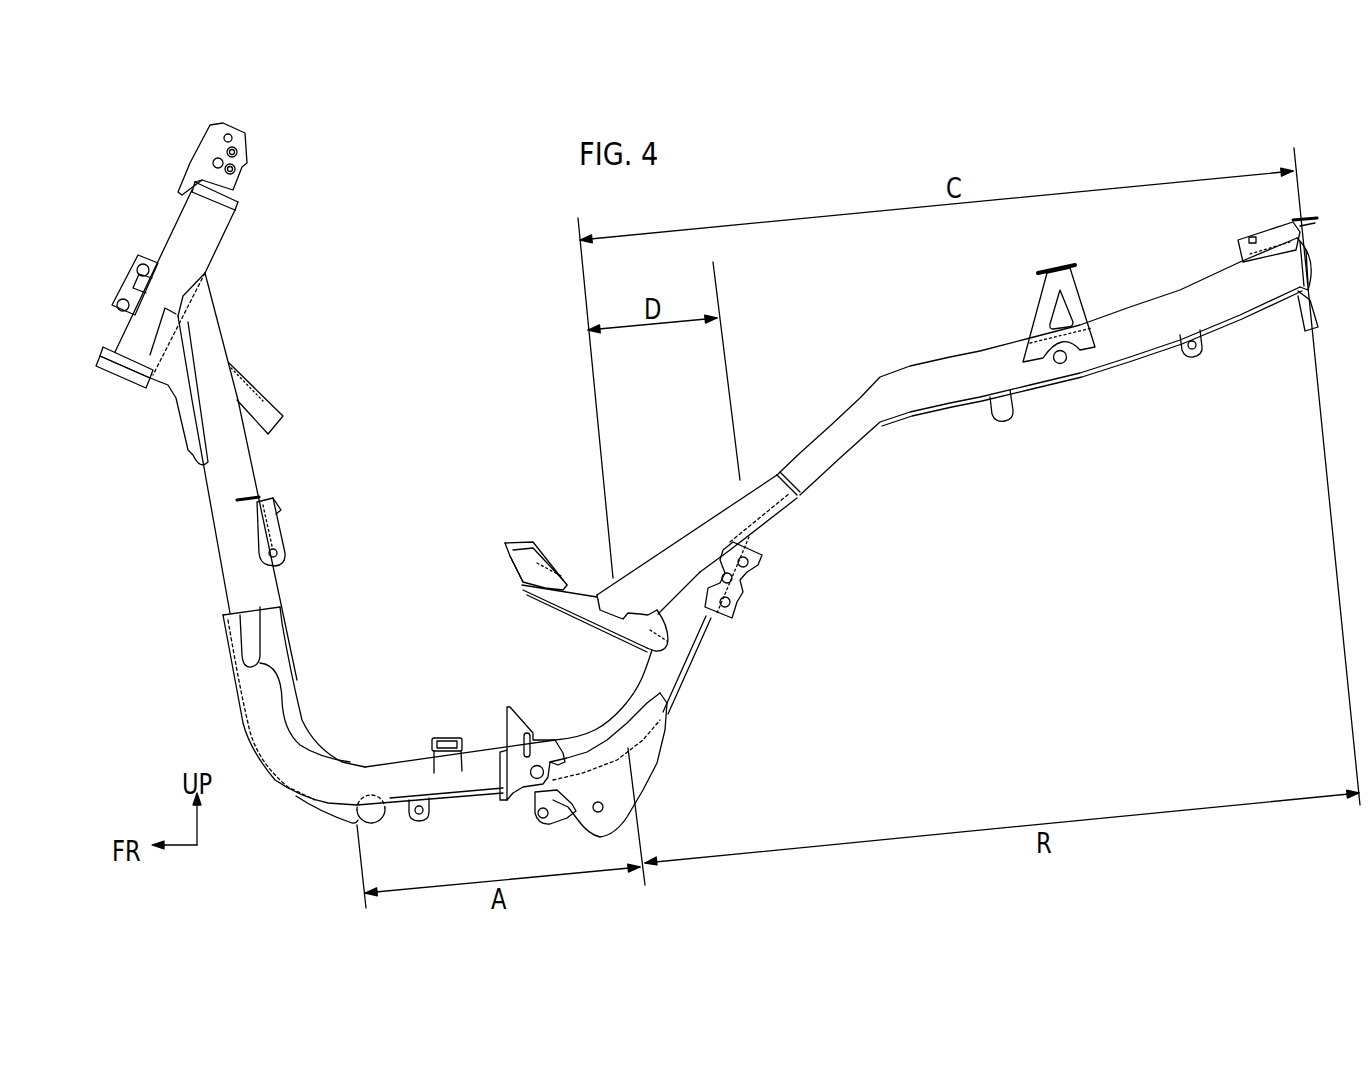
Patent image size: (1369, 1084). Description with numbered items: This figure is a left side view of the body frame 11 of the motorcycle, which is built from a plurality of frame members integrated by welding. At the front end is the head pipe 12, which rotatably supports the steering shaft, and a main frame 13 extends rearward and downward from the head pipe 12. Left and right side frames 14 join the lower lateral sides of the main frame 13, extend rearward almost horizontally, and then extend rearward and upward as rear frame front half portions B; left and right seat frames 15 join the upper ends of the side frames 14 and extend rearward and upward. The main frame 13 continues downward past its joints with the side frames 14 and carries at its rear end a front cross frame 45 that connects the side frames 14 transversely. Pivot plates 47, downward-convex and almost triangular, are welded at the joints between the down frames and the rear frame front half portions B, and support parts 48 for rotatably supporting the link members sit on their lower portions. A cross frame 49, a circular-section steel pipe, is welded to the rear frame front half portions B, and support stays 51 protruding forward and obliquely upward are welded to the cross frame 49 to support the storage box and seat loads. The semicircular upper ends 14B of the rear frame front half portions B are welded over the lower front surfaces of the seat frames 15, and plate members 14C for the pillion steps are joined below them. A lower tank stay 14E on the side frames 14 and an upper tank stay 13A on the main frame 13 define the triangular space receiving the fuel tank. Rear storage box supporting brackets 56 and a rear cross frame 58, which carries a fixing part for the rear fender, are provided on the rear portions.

The body frame 11 is at (470, 327).
The head pipe 12 is at (213, 237).
The main frame 13 is at (222, 540).
The upper tank stay 13A is at (272, 501).
The side frame 14 is at (488, 747).
The upper end of rear frame front half portion 14B is at (768, 505).
The plate member 14C is at (740, 608).
The lower tank stay 14E is at (447, 737).
The seat frame 15 is at (865, 428).
The front cross frame 45 is at (382, 818).
The pivot plate 47 is at (643, 767).
The support part 48 is at (597, 812).
The cross frame 49 is at (583, 593).
The support stay 51 is at (520, 538).
The rear storage box supporting bracket 56 is at (1080, 300).
The rear cross frame 58 is at (1273, 236).
The rear frame front half portion B is at (690, 668).